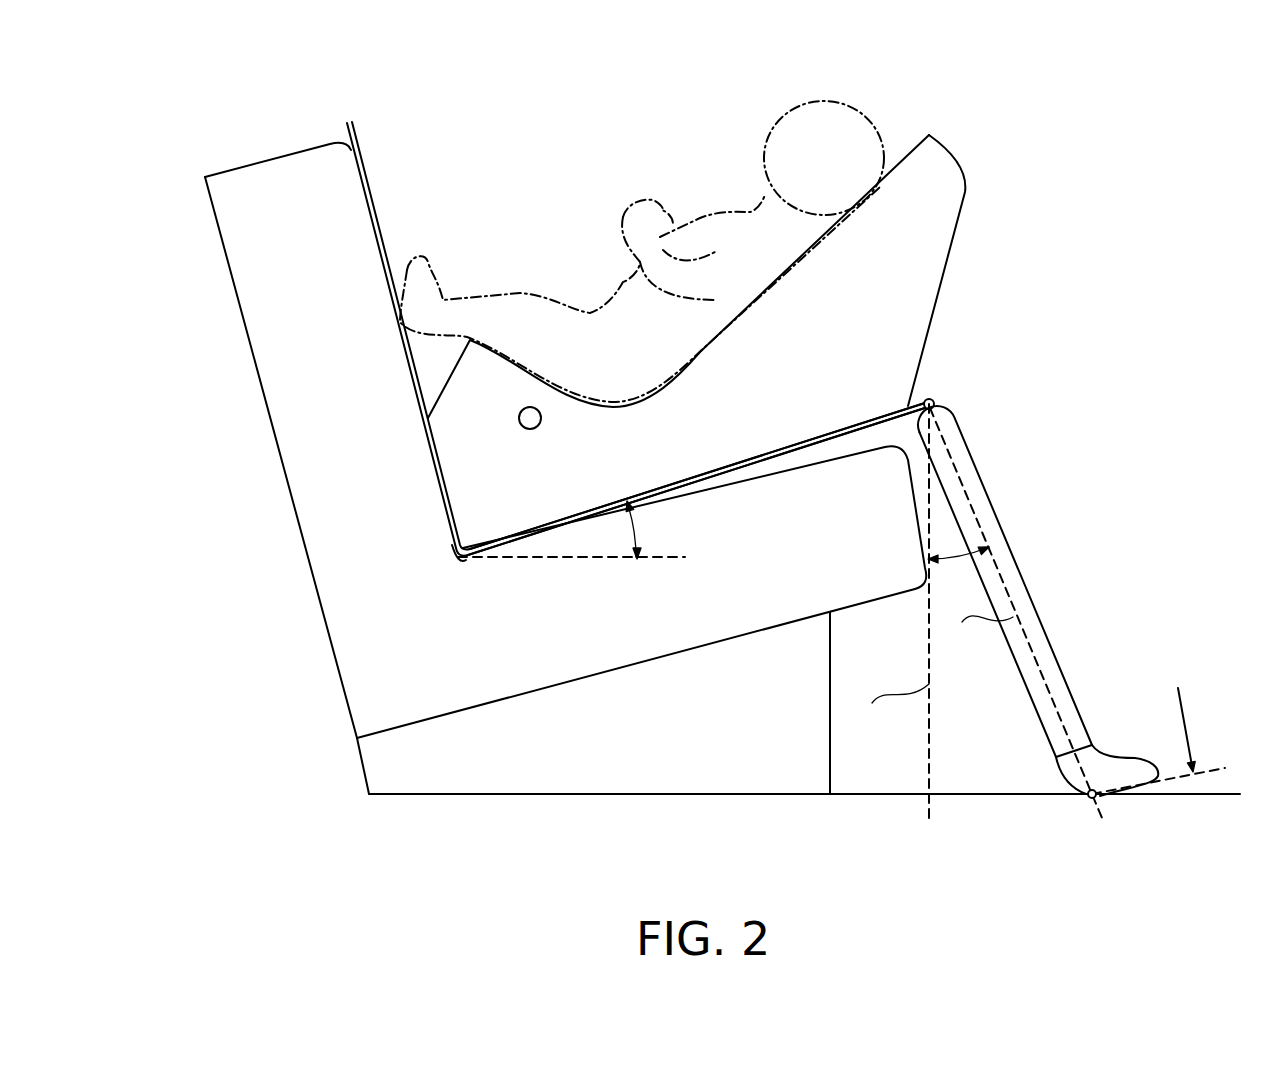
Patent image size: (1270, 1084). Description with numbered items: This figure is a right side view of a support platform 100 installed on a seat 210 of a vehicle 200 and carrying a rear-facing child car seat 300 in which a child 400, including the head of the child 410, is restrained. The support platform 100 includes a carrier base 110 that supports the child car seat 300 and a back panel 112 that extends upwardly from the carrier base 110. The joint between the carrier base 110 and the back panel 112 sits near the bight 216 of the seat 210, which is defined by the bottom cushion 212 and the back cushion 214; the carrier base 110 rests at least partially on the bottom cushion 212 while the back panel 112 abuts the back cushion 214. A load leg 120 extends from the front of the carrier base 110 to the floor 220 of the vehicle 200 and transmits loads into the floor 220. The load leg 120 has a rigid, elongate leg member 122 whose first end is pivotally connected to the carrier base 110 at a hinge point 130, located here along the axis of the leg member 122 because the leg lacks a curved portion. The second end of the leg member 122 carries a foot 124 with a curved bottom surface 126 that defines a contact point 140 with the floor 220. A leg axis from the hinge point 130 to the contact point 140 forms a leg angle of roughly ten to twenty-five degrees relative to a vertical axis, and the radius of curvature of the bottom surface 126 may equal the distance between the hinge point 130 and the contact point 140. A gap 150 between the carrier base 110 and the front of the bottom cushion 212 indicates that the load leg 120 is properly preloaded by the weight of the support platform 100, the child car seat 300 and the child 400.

The support platform 100 is at (786, 497).
The carrier base 110 is at (748, 454).
The back panel 112 is at (368, 178).
The load leg 120 is at (1039, 638).
The leg member 122 is at (992, 506).
The foot 124 is at (1097, 752).
The bottom surface 126 is at (1135, 795).
The hinge point 130 is at (934, 402).
The contact point 140 is at (1086, 803).
The gap 150 is at (852, 450).
The vehicle 200 is at (545, 479).
The seat 210 is at (579, 620).
The bottom cushion 212 is at (611, 648).
The back cushion 214 is at (283, 378).
The bight 216 is at (455, 562).
The floor 220 is at (860, 795).
The child car seat 300 is at (870, 330).
The child 400 is at (653, 221).
The head of the child 410 is at (832, 100).